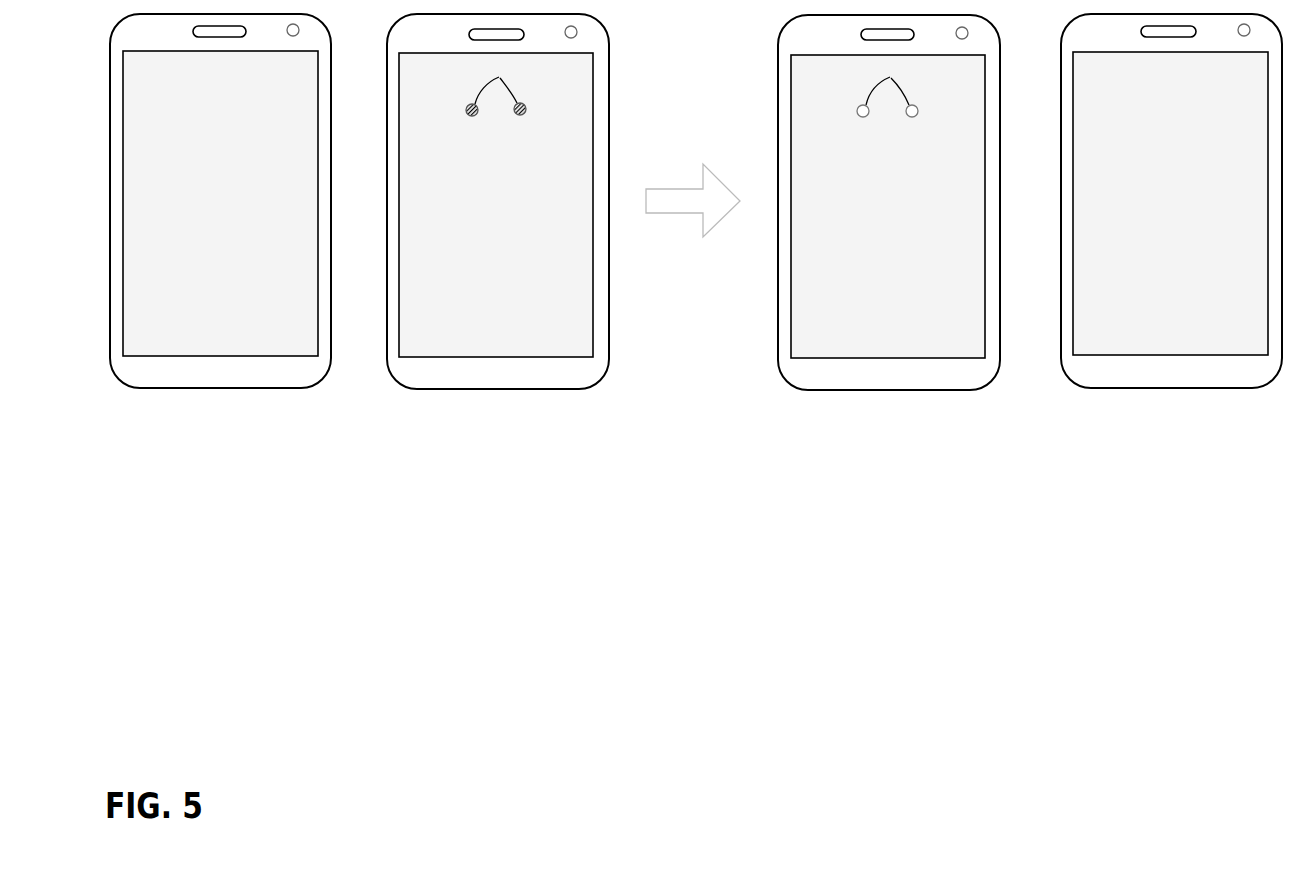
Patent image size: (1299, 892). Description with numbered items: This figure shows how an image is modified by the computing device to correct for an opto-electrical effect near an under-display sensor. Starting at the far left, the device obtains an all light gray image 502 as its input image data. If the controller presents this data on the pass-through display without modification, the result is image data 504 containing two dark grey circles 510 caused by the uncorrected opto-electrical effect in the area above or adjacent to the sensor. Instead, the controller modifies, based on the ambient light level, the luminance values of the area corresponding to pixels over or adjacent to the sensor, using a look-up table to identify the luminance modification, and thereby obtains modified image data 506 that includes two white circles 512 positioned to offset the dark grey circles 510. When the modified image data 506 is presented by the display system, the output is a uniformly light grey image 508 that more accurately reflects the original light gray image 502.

The light gray image 502 is at (201, 340).
The image data 504 is at (475, 339).
The modified image data 506 is at (875, 339).
The uniformly light grey image 508 is at (1148, 337).
The dark grey circles 510 is at (499, 77).
The white circles 512 is at (890, 77).